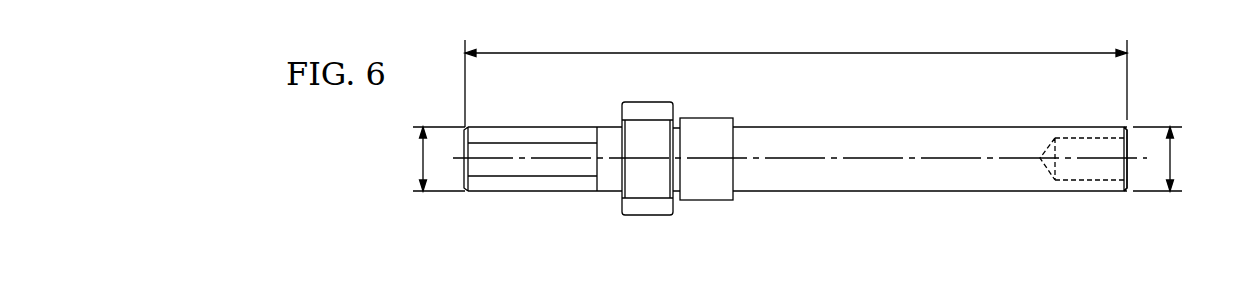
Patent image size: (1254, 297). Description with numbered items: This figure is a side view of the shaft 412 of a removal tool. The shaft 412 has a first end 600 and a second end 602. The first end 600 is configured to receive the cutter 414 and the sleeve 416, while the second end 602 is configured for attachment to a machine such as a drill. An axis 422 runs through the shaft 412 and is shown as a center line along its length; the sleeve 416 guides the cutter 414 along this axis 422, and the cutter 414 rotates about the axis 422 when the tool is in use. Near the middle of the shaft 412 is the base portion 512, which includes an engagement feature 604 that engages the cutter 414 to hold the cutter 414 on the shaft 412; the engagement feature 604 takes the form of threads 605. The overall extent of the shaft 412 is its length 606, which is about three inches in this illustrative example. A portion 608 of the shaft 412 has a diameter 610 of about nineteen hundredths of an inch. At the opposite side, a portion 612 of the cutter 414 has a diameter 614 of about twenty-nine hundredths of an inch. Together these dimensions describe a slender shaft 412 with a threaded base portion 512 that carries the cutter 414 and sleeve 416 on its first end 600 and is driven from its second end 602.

The first end 600 is at (800, 168).
The second end 602 is at (463, 167).
The engagement feature 604 is at (705, 118).
The threads 605 is at (705, 200).
The length 606 is at (761, 53).
The portion 608 is at (1018, 127).
The diameter 610 is at (1172, 160).
The portion 612 is at (533, 127).
The diameter 614 is at (423, 160).
The shaft 412 is at (535, 191).
The cutter 414 is at (855, 191).
The sleeve 416 is at (1128, 140).
The axis 422 is at (932, 162).
The base portion 512 is at (650, 215).